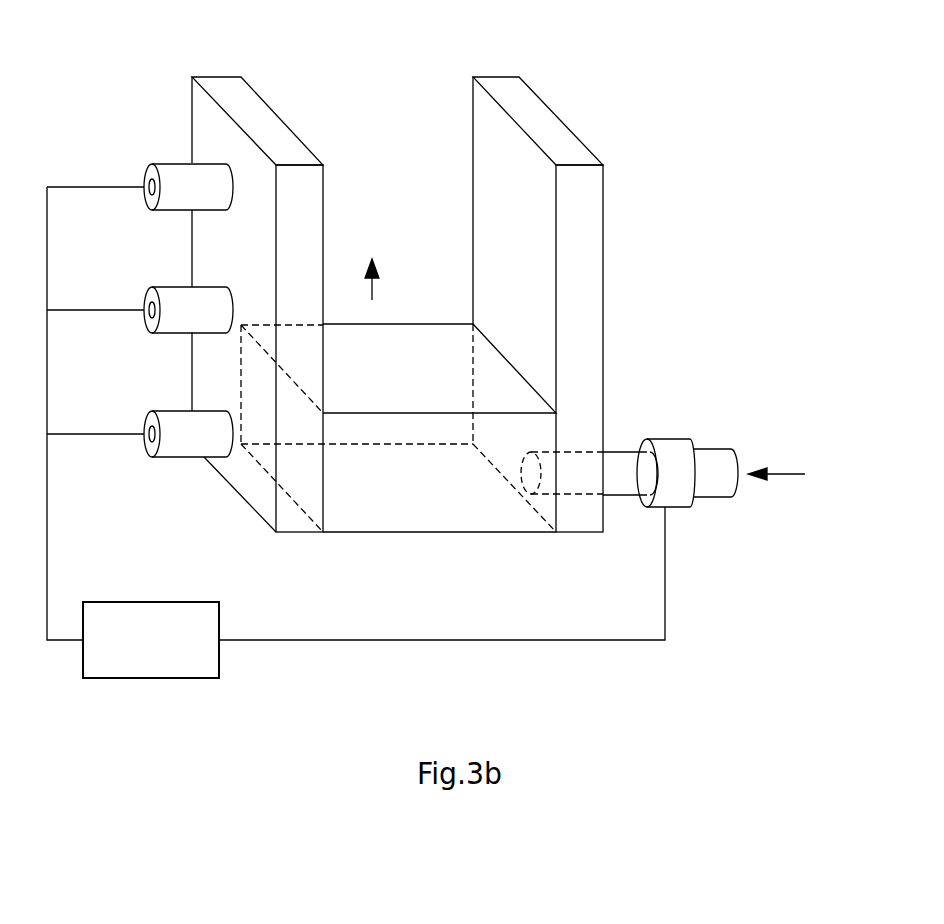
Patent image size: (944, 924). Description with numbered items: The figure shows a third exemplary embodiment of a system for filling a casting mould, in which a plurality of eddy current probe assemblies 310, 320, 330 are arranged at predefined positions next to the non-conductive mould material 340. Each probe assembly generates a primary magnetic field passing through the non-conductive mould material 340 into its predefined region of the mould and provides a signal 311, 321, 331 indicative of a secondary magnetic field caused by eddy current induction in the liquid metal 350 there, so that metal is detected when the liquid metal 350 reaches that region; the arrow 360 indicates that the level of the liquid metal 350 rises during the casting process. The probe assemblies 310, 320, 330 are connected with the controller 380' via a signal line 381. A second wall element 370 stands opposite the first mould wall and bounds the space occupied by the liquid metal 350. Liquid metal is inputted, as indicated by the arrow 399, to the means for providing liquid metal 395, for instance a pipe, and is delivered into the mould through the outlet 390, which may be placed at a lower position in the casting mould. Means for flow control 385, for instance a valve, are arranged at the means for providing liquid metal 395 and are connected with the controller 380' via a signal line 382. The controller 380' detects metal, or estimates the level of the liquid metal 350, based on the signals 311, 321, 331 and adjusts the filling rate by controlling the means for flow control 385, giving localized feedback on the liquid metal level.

The eddy current probe assembly 310 is at (172, 420).
The signal 311 is at (147, 425).
The eddy current probe assembly 320 is at (172, 297).
The signal 321 is at (145, 305).
The eddy current probe assembly 330 is at (170, 173).
The signal 331 is at (145, 175).
The non-conductive mould material 340 is at (222, 88).
The liquid metal 350 is at (396, 518).
The arrow 360 is at (372, 297).
The side wall 370 is at (500, 90).
The controller 380' is at (151, 672).
The signal line 381 is at (50, 523).
The signal line 382 is at (442, 640).
The means for flow control 385 is at (665, 438).
The outlet 390 is at (529, 483).
The means for providing liquid metal 395 is at (717, 447).
The arrow 399 is at (785, 470).